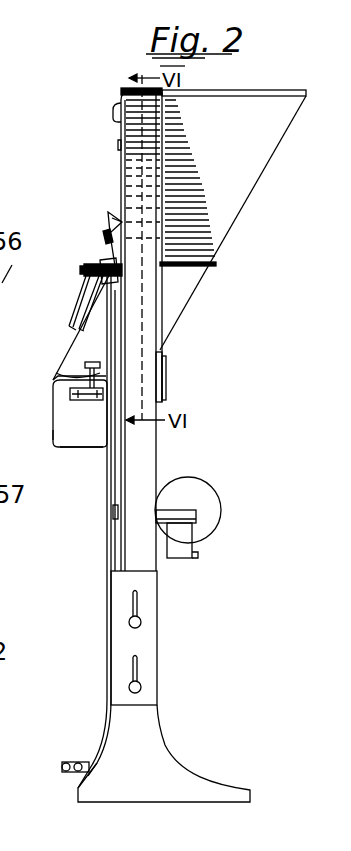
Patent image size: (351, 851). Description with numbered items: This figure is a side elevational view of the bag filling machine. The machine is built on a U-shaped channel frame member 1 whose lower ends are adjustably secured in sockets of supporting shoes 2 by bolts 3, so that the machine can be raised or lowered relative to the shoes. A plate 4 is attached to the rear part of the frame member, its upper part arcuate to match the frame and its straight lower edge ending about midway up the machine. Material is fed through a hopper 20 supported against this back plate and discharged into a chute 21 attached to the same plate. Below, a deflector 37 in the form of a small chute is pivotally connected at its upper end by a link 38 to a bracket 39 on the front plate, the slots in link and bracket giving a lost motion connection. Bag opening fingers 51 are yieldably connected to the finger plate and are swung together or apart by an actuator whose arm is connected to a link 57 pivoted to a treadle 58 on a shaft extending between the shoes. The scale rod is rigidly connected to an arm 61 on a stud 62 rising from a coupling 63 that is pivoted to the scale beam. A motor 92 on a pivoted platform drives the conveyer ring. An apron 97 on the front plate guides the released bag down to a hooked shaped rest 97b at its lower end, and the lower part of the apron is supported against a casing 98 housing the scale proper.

The U-shaped channel frame member 1 is at (146, 453).
The supporting shoe 2 is at (150, 754).
The bolt 3 is at (140, 685).
The plate 4 is at (160, 308).
The hopper 20 is at (245, 176).
The chute 21 is at (188, 288).
The deflector 37 is at (114, 248).
The link 38 is at (104, 233).
The bracket 39 is at (109, 214).
The bag opening finger 51 is at (72, 324).
The link 57 is at (114, 493).
The treadle 58 is at (66, 772).
The arm 61 is at (102, 358).
The stud 62 is at (56, 380).
The coupling 63 is at (70, 399).
The motor 92 is at (210, 508).
The apron 97 is at (80, 413).
The hooked shaped rest 97b is at (53, 428).
The casing 98 is at (90, 446).